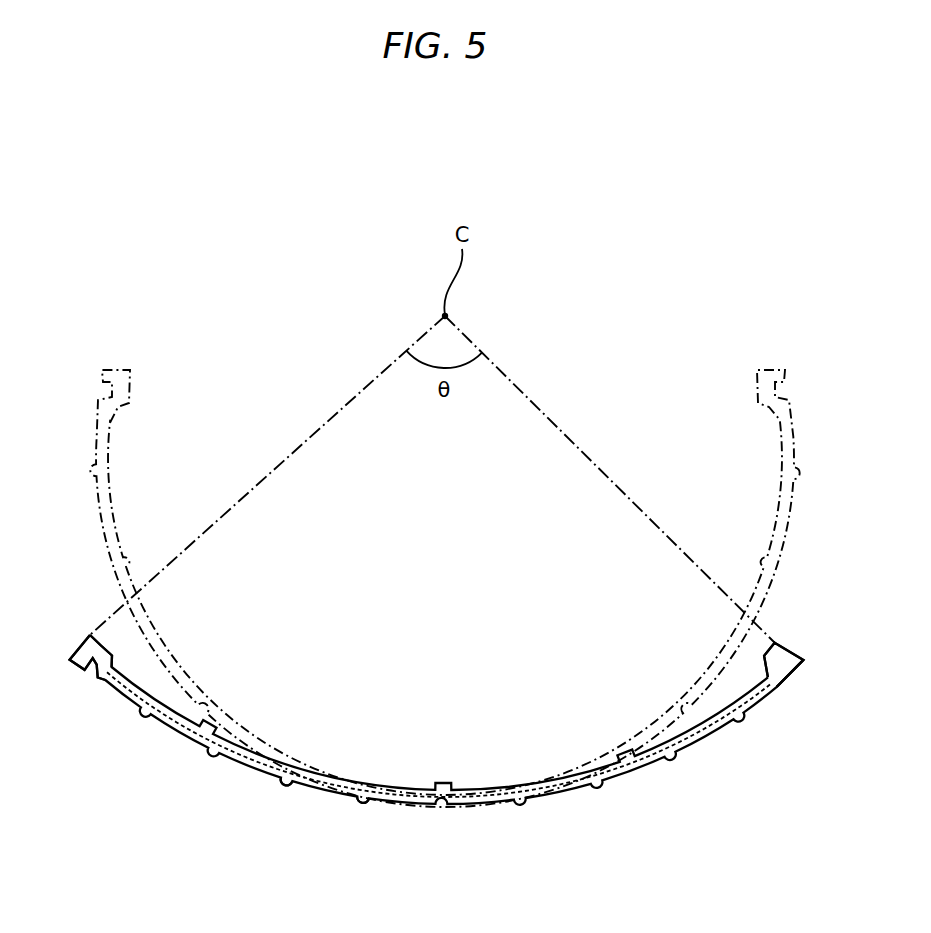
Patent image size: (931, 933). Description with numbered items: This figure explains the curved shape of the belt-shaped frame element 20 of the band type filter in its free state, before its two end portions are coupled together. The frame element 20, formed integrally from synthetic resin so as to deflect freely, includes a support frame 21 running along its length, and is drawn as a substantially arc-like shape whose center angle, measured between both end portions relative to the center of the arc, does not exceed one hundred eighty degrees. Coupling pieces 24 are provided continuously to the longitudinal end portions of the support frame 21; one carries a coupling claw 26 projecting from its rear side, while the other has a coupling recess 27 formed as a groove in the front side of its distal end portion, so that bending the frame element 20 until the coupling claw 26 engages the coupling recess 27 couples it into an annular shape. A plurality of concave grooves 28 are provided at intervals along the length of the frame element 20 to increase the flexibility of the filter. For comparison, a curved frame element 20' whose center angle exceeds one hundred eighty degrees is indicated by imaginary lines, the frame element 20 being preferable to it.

The frame element 20 is at (437, 784).
The curved frame element 20' is at (444, 588).
The support frame 21 is at (483, 798).
The coupling piece 24 is at (108, 678).
The coupling claw 26 is at (778, 652).
The coupling recess 27 is at (93, 662).
The concave groove 28 is at (293, 780).